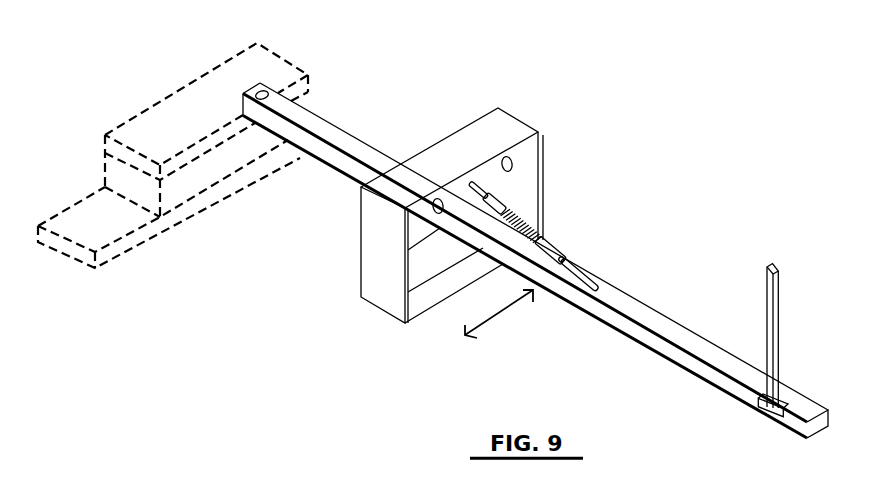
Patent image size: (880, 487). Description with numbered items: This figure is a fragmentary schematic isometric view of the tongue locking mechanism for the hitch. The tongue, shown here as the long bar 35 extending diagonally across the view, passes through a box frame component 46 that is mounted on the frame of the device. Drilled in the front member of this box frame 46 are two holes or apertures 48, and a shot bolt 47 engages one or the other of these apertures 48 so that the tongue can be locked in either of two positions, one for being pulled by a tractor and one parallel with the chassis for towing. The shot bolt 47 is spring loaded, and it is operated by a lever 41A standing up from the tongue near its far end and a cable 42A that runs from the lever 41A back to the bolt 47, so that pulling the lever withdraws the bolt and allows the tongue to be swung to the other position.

The bar 35 is at (660, 322).
The lever 41A is at (775, 317).
The cable 42A is at (617, 303).
The box frame component 46 is at (525, 205).
The shot bolt 47 is at (470, 185).
The holes or apertures 48 is at (513, 164).